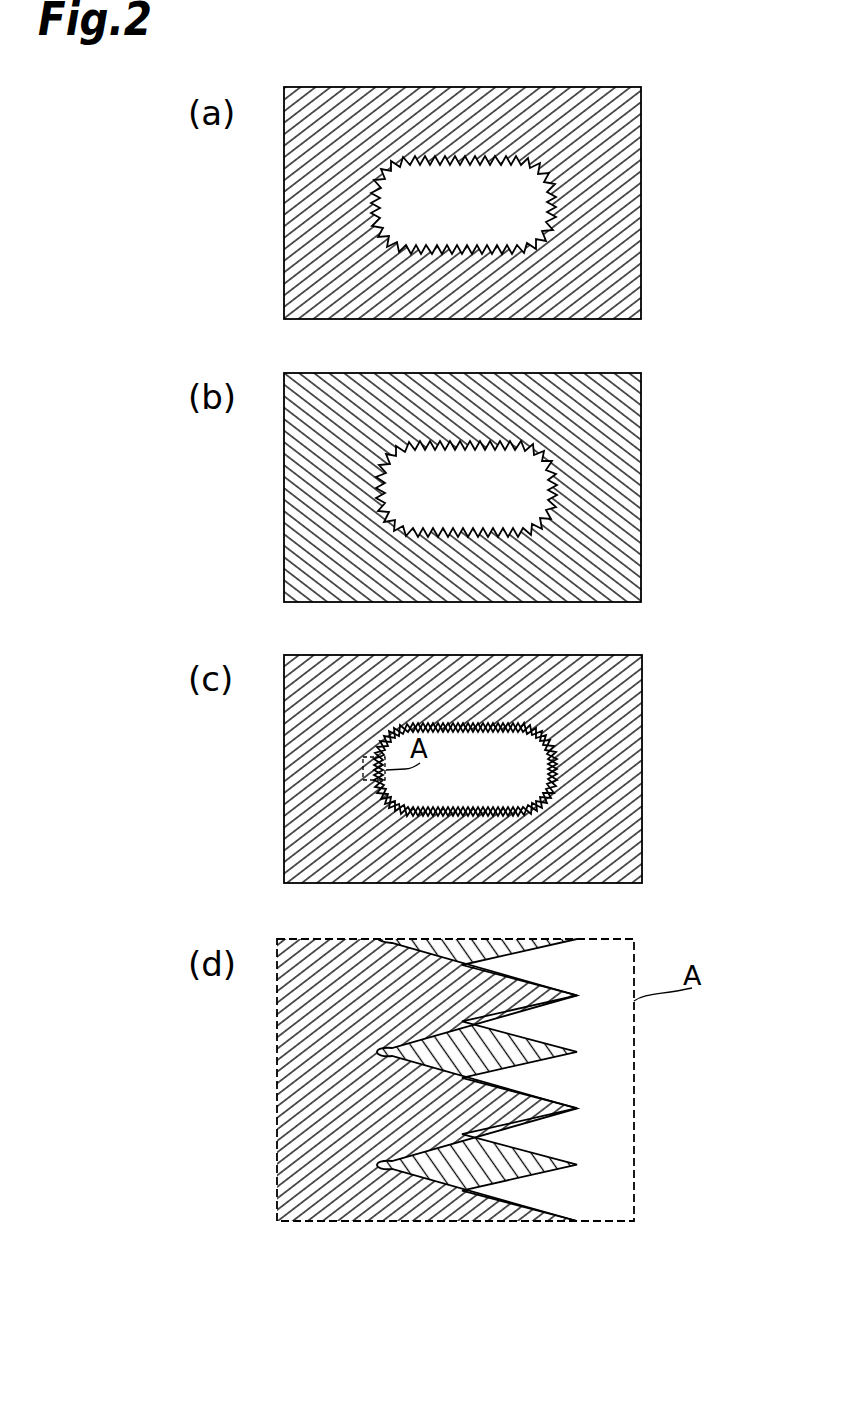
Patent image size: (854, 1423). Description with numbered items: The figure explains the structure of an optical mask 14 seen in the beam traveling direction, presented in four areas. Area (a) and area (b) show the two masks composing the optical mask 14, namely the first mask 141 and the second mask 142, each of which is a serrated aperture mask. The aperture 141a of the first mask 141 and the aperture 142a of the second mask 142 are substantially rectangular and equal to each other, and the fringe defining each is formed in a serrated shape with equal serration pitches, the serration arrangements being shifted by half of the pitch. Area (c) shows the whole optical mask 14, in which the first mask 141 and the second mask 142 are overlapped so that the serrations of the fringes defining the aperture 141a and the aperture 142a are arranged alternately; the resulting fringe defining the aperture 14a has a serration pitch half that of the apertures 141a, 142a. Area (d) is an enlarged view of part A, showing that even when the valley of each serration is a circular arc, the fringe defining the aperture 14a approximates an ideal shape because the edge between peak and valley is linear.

The optical mask 14 is at (672, 722).
The aperture of the optical mask 14a is at (520, 775).
The first mask 141 is at (671, 120).
The aperture of the first mask 141a is at (515, 205).
The second mask 142 is at (672, 423).
The aperture of the second mask 142a is at (518, 490).